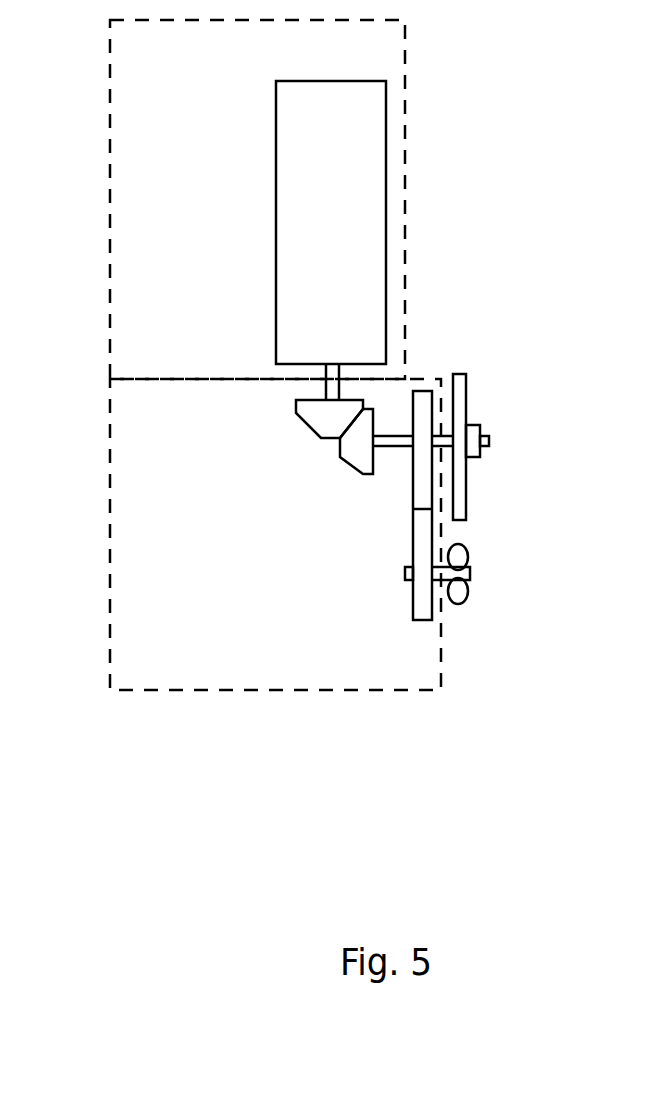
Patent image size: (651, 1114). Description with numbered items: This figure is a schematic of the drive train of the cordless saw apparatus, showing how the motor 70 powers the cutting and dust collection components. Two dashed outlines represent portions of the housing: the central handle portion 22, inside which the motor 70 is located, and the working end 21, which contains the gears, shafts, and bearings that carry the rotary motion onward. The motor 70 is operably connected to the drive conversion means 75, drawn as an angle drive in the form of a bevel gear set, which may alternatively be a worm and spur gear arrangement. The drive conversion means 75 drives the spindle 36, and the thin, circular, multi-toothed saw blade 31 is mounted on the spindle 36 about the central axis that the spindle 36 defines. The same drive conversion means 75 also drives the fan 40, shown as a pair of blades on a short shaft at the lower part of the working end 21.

The working end 21 is at (110, 483).
The central handle portion 22 is at (110, 172).
The saw blade 31 is at (466, 376).
The spindle 36 is at (480, 425).
The fan 40 is at (458, 590).
The motor 70 is at (297, 177).
The drive conversion means 75 is at (371, 494).